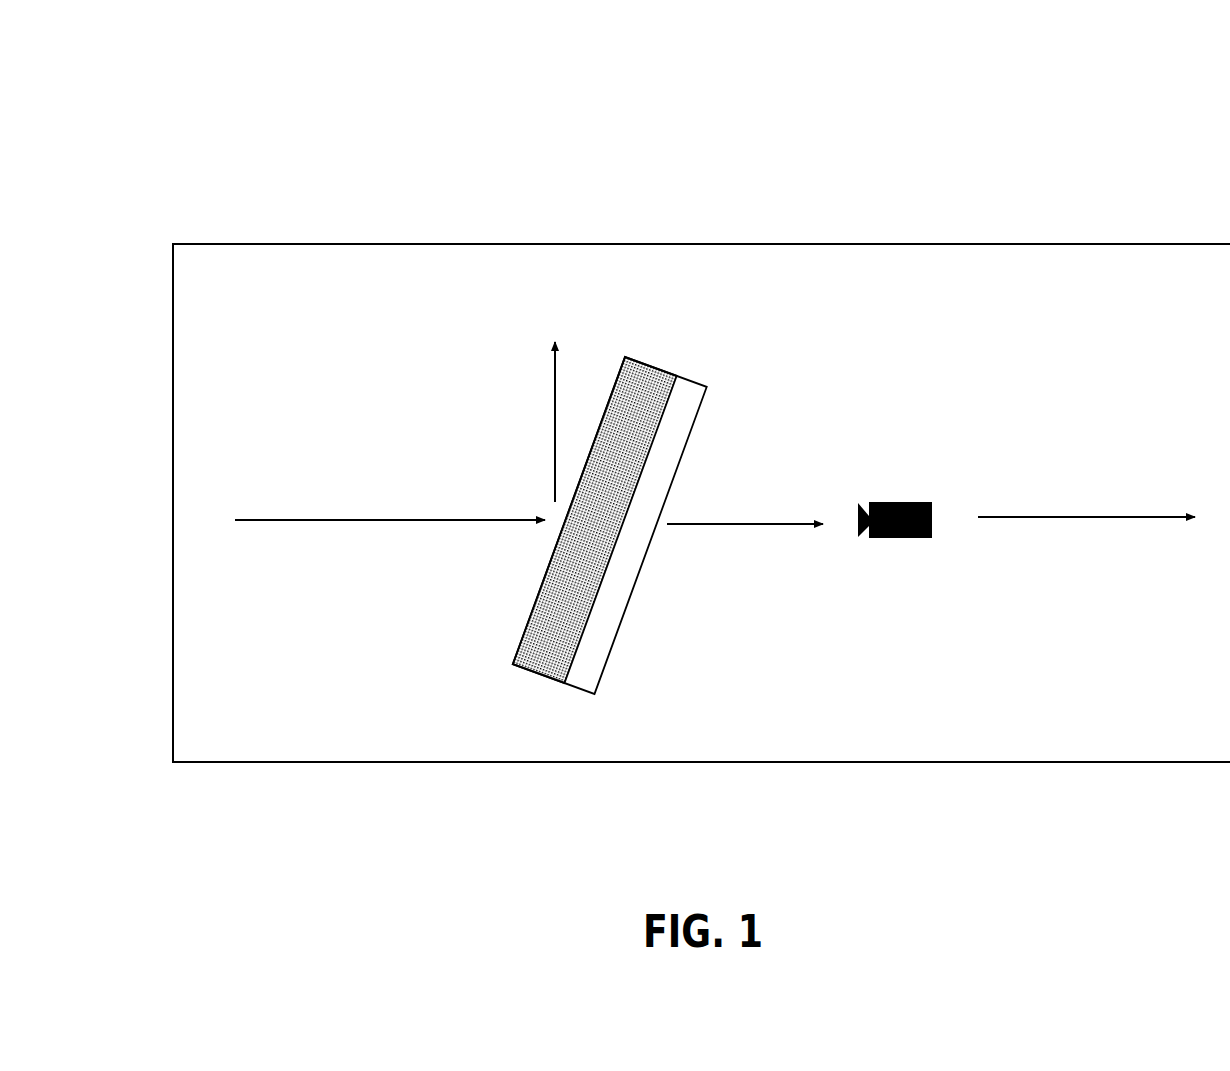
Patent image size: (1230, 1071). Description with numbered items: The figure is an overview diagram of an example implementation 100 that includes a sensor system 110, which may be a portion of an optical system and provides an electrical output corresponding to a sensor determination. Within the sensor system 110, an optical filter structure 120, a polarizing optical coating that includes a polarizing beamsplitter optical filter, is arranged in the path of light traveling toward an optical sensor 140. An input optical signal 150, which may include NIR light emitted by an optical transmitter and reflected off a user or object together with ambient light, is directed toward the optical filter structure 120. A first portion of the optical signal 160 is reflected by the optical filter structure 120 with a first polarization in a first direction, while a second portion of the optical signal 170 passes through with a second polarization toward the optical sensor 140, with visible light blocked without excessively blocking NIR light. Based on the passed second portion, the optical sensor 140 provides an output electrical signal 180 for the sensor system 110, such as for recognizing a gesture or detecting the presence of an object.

The example implementation 100 is at (198, 50).
The sensor system 110 is at (729, 244).
The optical filter structure 120 is at (610, 510).
The optical sensor 140 is at (913, 476).
The input optical signal 150 is at (418, 452).
The first portion of the optical signal 160 is at (574, 280).
The second portion of the optical signal 170 is at (787, 576).
The output electrical signal 180 is at (1112, 454).